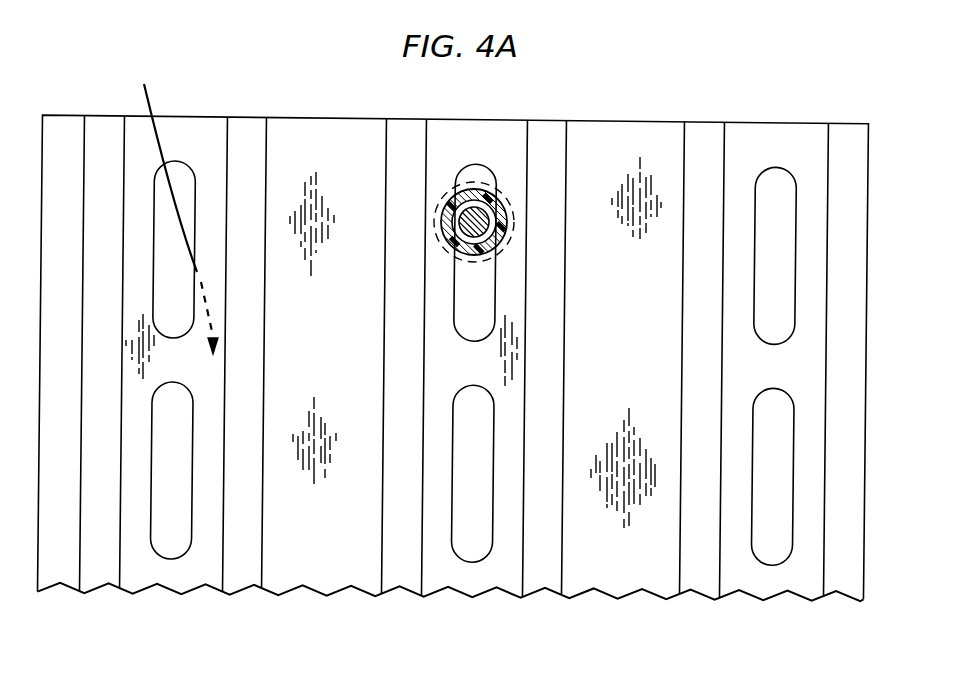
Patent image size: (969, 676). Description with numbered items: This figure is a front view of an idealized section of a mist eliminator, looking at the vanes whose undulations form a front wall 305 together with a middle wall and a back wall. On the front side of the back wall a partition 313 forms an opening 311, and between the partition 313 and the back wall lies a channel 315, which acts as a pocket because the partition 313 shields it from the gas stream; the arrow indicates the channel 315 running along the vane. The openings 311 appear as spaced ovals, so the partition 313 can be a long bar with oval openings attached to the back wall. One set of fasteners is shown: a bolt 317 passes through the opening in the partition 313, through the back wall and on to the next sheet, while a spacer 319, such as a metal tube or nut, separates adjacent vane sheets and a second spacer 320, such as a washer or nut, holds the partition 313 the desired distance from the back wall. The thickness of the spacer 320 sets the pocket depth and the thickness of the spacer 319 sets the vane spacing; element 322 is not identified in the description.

The front wall 305 is at (321, 143).
The opening 311 is at (497, 311).
The partition 313 is at (511, 135).
The channel 315 is at (163, 209).
The bolt 317 is at (452, 240).
The spacer 319 is at (462, 168).
The second spacer 320 is at (436, 216).
The web 322 is at (260, 547).